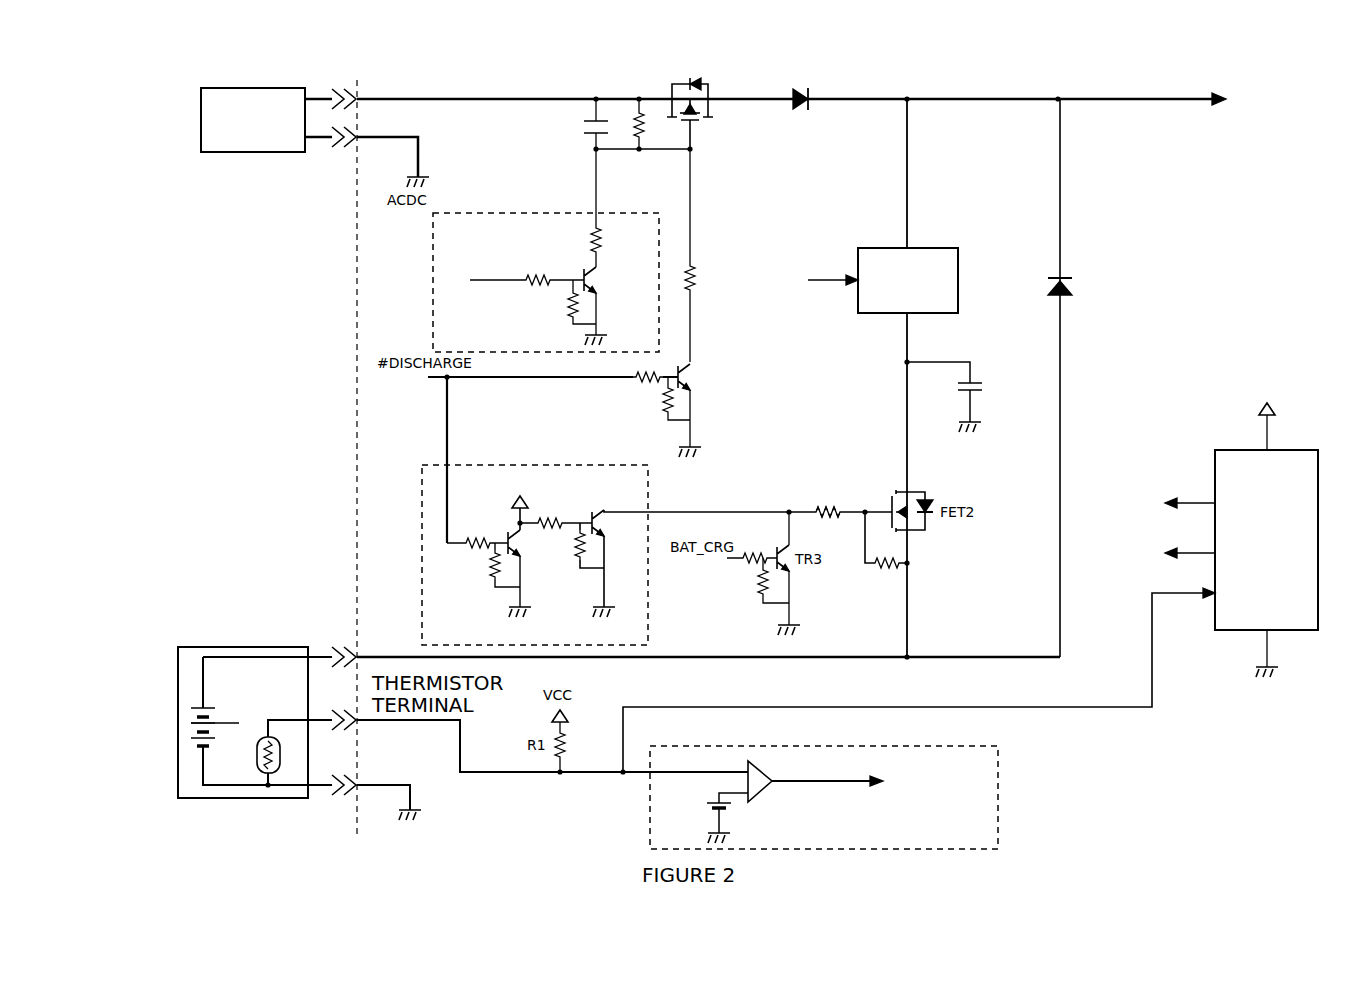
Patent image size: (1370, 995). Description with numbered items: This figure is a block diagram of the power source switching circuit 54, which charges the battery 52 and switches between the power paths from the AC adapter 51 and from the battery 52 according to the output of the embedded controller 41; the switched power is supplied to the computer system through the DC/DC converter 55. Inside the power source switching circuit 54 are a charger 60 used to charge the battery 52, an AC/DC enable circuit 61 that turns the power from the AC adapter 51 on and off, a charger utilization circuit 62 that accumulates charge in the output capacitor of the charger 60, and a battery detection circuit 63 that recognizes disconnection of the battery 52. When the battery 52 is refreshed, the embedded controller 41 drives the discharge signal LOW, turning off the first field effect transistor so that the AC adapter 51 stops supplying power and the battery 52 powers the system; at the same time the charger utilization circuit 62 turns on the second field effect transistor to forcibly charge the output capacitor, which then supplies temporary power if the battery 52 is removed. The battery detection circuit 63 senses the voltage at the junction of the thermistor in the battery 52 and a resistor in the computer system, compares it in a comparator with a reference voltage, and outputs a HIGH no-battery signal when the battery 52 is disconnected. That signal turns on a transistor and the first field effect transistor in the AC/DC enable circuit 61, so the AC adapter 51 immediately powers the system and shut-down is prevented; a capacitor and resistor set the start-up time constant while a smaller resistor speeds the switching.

The embedded controller 41 is at (1215, 479).
The AC adapter 51 is at (262, 152).
The battery 52 is at (283, 647).
The power source switching circuit 54 is at (963, 90).
The DC/DC converter 55 is at (1211, 125).
The charger 60 is at (958, 281).
The AC/DC enable circuit 61 is at (433, 340).
The charger utilization circuit 62 is at (422, 562).
The battery detection circuit 63 is at (998, 788).